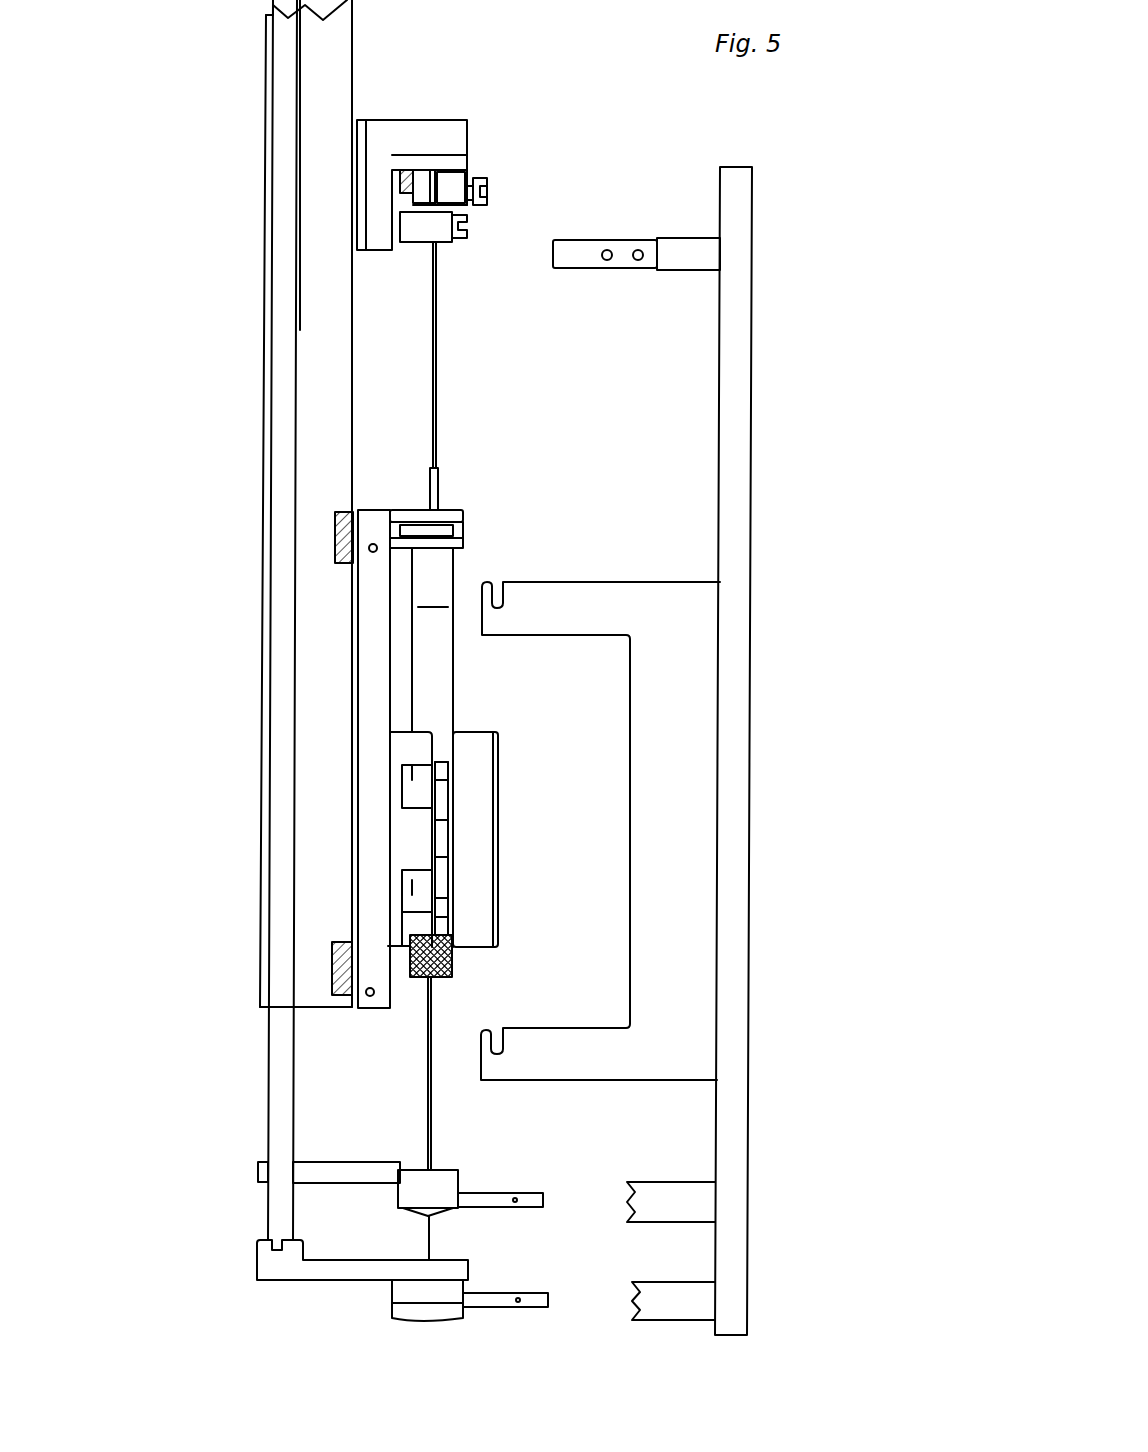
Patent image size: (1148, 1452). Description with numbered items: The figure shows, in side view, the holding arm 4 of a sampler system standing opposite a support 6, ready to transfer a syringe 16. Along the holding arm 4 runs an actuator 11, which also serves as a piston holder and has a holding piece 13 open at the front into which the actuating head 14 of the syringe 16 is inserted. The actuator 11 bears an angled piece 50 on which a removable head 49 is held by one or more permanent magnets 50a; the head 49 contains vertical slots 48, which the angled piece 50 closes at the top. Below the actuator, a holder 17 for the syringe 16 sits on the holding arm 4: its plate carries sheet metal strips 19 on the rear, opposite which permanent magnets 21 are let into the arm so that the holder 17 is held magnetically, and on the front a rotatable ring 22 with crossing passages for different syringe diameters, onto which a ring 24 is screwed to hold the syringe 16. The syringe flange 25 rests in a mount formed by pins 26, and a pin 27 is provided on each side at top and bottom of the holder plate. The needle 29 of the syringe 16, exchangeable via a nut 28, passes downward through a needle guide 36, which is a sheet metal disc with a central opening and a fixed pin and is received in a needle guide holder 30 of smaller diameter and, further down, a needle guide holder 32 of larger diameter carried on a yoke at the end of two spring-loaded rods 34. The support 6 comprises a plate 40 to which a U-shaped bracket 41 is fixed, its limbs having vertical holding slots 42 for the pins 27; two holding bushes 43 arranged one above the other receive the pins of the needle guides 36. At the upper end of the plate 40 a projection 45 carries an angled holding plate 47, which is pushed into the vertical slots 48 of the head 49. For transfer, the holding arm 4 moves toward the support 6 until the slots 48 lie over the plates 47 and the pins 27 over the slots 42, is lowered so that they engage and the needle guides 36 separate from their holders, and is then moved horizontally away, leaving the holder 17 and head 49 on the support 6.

The holding arm 4 is at (256, 210).
The support 6 is at (762, 404).
The actuator 11 is at (380, 116).
The holding piece 13 is at (433, 227).
The actuating head 14 is at (462, 226).
The syringe 16 is at (462, 684).
The holder 17 is at (385, 487).
The sheet metal strips 19 is at (358, 566).
The permanent magnets 21 is at (340, 531).
The ring 22 is at (398, 748).
The ring 24 is at (488, 788).
The syringe flange 25 is at (458, 531).
The pins 26 is at (450, 515).
The pin 27 is at (366, 994).
The nut 28 is at (452, 960).
The needle 29 is at (434, 1020).
The needle guide holder 30 is at (398, 1196).
The needle guide holder 32 is at (400, 1297).
The rods 34 is at (272, 1131).
The needle guide 36 is at (488, 1195).
The plate 40 is at (745, 293).
The U-shaped bracket 41 is at (632, 600).
The holding slots 42 is at (497, 598).
The holding bushes 43 is at (668, 1202).
The projection 45 is at (688, 250).
The angled holding plate 47 is at (575, 262).
The vertical slots 48 is at (435, 190).
The head 49 is at (452, 185).
The angled piece 50 is at (447, 160).
The permanent magnets 50a is at (400, 178).